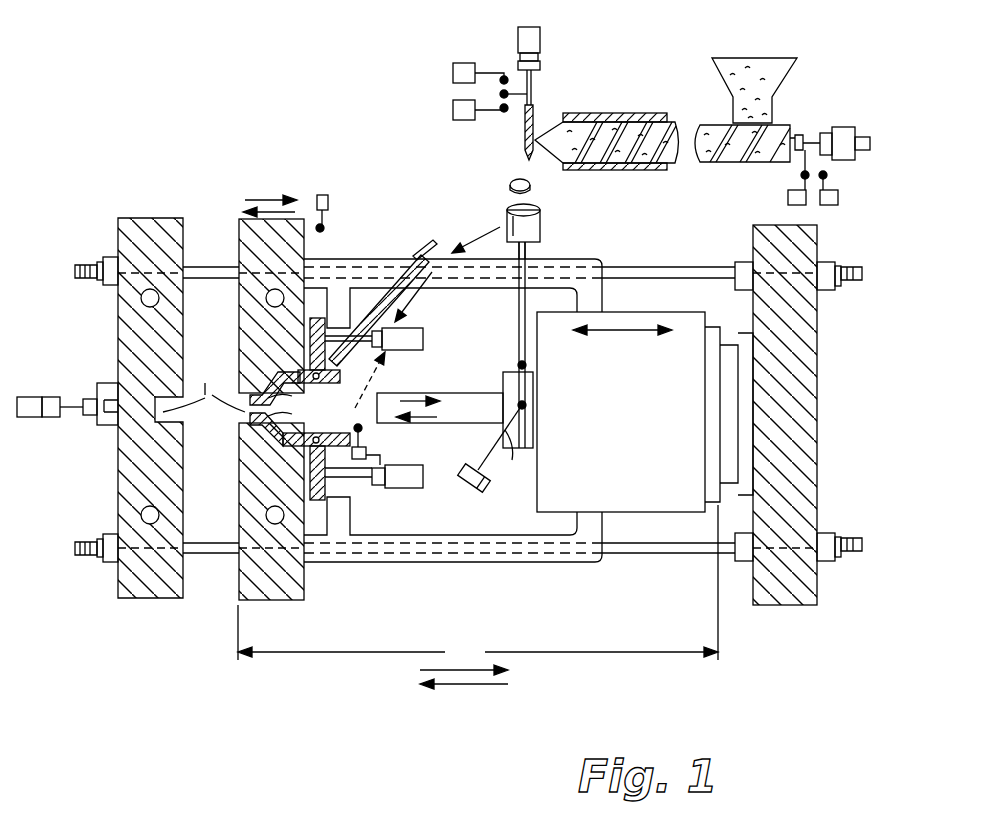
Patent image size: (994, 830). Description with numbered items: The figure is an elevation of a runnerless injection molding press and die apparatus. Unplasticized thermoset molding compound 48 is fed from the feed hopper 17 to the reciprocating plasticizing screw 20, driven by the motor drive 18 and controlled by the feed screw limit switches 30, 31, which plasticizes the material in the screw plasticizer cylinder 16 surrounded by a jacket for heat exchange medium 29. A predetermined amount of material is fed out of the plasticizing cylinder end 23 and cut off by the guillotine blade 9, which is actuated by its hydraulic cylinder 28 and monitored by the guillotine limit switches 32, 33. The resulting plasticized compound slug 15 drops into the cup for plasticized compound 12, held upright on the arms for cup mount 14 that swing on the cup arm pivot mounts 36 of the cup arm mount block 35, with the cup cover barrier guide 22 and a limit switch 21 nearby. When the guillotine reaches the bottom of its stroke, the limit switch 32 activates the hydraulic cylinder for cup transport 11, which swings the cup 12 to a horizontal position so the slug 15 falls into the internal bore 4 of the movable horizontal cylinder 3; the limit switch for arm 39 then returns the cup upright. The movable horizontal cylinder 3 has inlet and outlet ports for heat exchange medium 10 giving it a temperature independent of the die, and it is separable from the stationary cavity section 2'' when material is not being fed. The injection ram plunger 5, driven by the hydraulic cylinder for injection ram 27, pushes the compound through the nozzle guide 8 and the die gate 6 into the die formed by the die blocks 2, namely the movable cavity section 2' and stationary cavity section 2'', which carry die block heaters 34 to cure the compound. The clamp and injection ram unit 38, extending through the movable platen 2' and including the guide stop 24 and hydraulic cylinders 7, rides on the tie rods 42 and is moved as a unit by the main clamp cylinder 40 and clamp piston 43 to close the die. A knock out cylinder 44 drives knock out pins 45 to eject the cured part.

The die blocks 2 is at (211, 577).
The movable cavity section 2' is at (271, 426).
The stationary cavity section 2'' is at (150, 426).
The movable horizontal cylinder 3 is at (316, 318).
The movable horizontal cylinder internal bore 4 is at (304, 392).
The injection ram plunger 5 is at (425, 395).
The die gate 6 is at (242, 393).
The hydraulic cylinders 7 is at (425, 340).
The guide for nozzles or nozzle aperture 8 is at (240, 462).
The guillotine blade 9 is at (524, 130).
The inlet and outlet ports for heat exchange medium 10 is at (320, 386).
The hydraulic cylinder for cup transport 11 is at (466, 480).
The cup for plasticized compound 12 is at (542, 236).
The arms for cup mount 14 is at (517, 290).
The plasticized compound slug 15 is at (510, 188).
The screw plasticizer cylinder 16 is at (555, 120).
The feed hopper 17 is at (712, 70).
The motor drive for plasticizer screw 18 is at (845, 127).
The reciprocating plasticizing screw 20 is at (670, 140).
The limit switch 21 is at (328, 202).
The cup cover barrier guide 22 is at (418, 250).
The plasticizing cylinder end 23 is at (533, 125).
The guide stop 24 is at (342, 300).
The hydraulic cylinder for injection ram 27 is at (503, 385).
The hydraulic cylinder for guillotine blade 28 is at (518, 40).
The jacket for heat exchange medium 29 is at (605, 170).
The limit switch feed screw 30 is at (840, 205).
The limit switch feed screw 31 is at (792, 205).
The guillotine limit switch 32 is at (453, 118).
The guillotine limit switch 33 is at (453, 72).
The die block heaters 34 is at (265, 308).
The cup arm mount block 35 is at (530, 480).
The cup arm pivot mounts 36 is at (518, 446).
The clamp and injection ram unit 38 is at (478, 597).
The limit switch for arm 39 is at (366, 453).
The main clamp cylinder 40 is at (655, 515).
The tie rods 42 is at (78, 272).
The clamp piston 43 is at (735, 405).
The knock out cylinder 44 is at (40, 418).
The knock out pins 45 is at (110, 385).
The unplasticized thermoset molding compound 48 is at (745, 75).